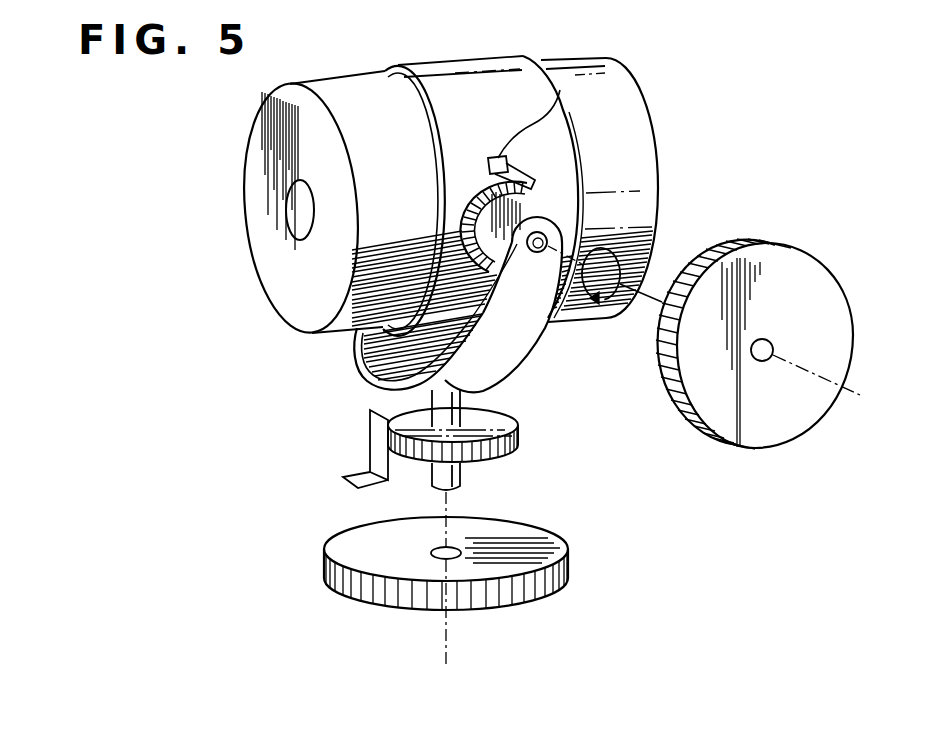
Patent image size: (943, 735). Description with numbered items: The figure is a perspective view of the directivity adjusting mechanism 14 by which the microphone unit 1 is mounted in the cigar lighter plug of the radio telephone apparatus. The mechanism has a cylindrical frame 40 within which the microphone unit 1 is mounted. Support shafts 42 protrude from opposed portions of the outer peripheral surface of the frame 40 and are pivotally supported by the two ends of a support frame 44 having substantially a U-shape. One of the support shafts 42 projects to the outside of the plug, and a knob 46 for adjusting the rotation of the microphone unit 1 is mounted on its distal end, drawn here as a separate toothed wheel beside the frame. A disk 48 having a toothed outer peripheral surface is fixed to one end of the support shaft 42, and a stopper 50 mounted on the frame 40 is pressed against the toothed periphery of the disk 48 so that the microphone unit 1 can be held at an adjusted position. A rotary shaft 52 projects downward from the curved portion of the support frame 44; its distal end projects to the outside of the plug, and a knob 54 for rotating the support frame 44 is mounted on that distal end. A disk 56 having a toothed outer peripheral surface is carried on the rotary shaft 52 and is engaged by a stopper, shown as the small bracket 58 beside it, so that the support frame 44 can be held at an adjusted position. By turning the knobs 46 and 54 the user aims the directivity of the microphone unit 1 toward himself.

The microphone unit 1 is at (264, 234).
The directivity adjusting mechanism 14 is at (343, 378).
The cylindrical frame 40 is at (473, 77).
The support shaft 42 is at (537, 252).
The support frame 44 is at (517, 370).
The knob 46 is at (722, 427).
The disk 48 is at (490, 232).
The stopper 50 is at (560, 90).
The rotary shaft 52 is at (458, 483).
The knob 54 is at (340, 549).
The disk 56 is at (500, 425).
The stop bracket 58 is at (370, 452).